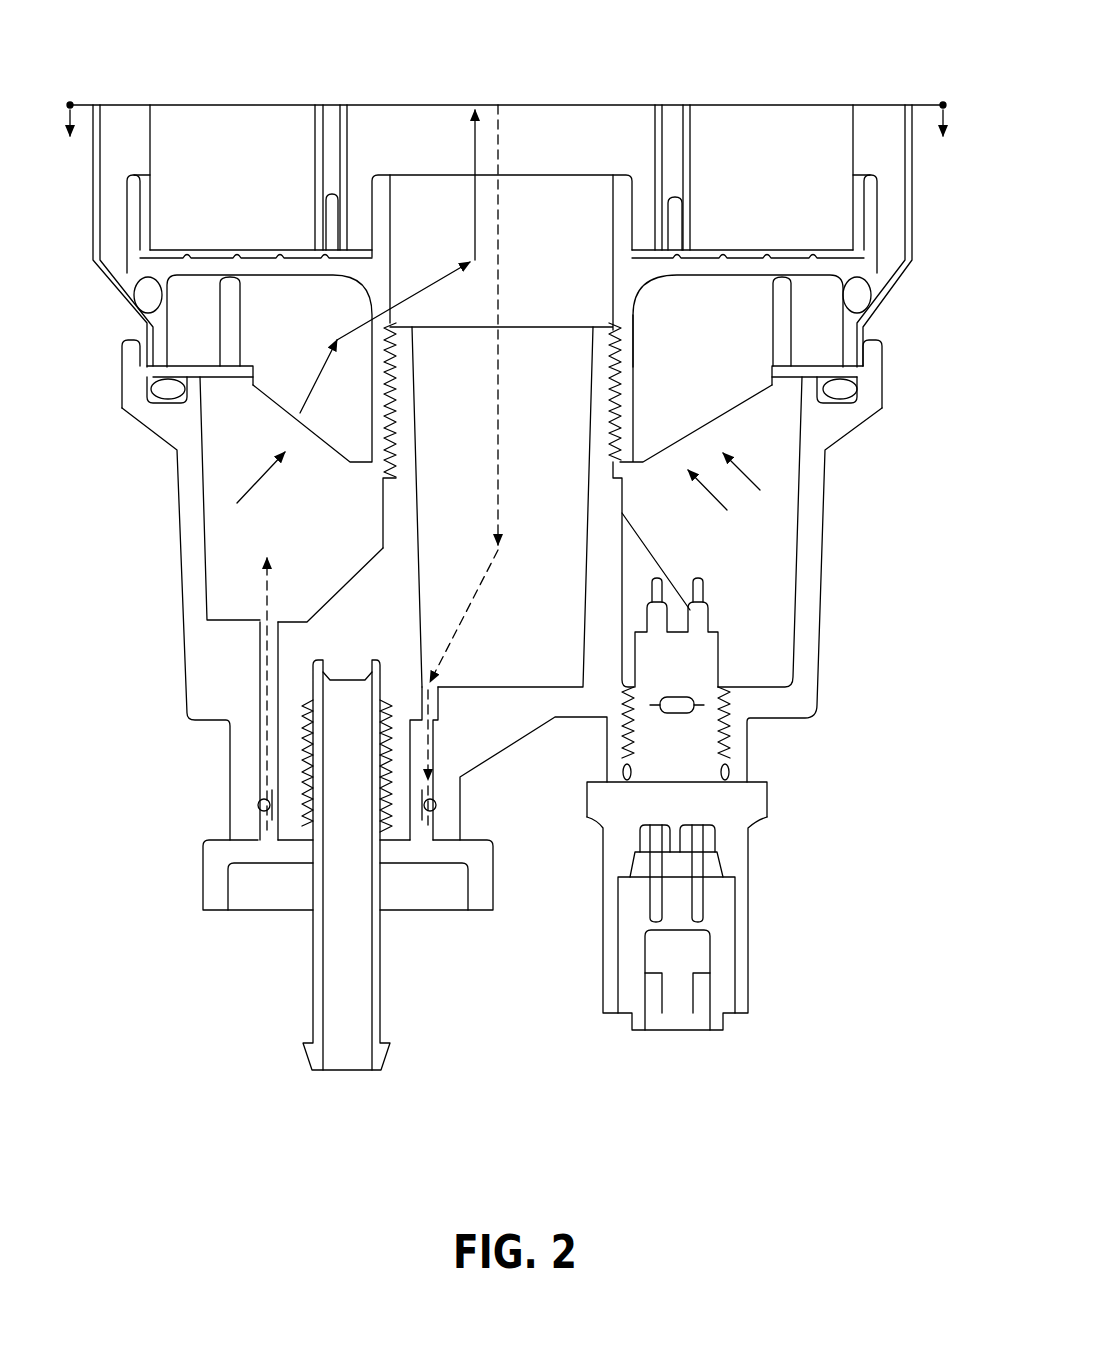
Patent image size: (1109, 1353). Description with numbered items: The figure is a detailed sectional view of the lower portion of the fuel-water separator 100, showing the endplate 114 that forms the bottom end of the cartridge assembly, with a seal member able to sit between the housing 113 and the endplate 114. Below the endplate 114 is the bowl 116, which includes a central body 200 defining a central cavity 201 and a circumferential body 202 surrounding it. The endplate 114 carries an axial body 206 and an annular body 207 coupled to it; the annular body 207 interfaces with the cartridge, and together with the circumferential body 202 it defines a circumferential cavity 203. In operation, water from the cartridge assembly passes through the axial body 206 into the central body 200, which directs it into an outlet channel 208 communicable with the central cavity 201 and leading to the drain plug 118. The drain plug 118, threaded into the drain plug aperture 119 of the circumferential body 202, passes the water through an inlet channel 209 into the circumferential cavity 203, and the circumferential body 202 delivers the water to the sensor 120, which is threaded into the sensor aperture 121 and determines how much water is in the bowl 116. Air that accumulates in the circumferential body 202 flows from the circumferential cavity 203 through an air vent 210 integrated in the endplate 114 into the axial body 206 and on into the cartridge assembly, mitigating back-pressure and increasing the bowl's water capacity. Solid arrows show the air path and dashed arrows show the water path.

The fuel-water separator 100 is at (922, 72).
The housing 113 is at (907, 246).
The endplate 114 is at (97, 307).
The bowl 116 is at (893, 510).
The drain plug 118 is at (313, 1000).
The drain plug aperture 119 is at (388, 778).
The sensor 120 is at (740, 862).
The sensor aperture 121 is at (733, 725).
The central body 200 is at (577, 347).
The central cavity 201 is at (588, 542).
The circumferential body 202 is at (220, 598).
The circumferential cavity 203 is at (205, 537).
The axial body 206 is at (560, 222).
The annular body 207 is at (757, 298).
The outlet channel 208 is at (438, 692).
The inlet channel 209 is at (260, 753).
The air vent 210 is at (337, 279).